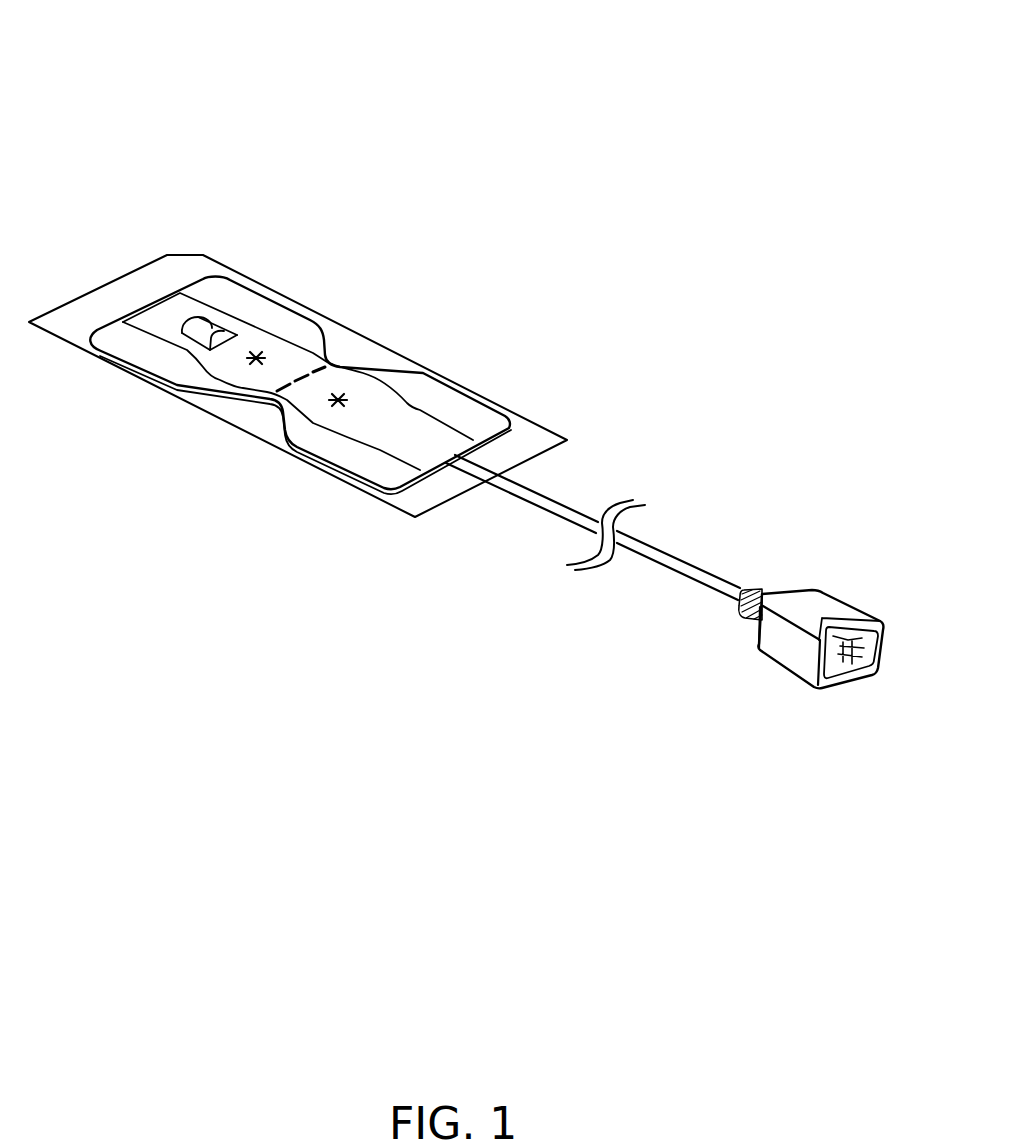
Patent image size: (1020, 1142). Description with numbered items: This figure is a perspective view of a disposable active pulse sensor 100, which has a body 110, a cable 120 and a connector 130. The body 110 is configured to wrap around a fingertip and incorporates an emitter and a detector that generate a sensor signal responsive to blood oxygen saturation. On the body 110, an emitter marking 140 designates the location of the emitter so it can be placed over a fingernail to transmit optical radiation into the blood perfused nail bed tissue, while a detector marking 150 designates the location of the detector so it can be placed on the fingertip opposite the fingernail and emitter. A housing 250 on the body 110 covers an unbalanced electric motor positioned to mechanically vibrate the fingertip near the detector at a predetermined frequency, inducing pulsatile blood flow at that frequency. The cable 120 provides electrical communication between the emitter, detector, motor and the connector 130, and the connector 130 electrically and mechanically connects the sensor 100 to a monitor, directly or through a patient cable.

The disposable active pulse sensor 100 is at (441, 48).
The body 110 is at (368, 367).
The cable 120 is at (663, 553).
The connector 130 is at (838, 600).
The emitter marking 140 is at (340, 404).
The detector marking 150 is at (252, 358).
The housing 250 is at (213, 317).